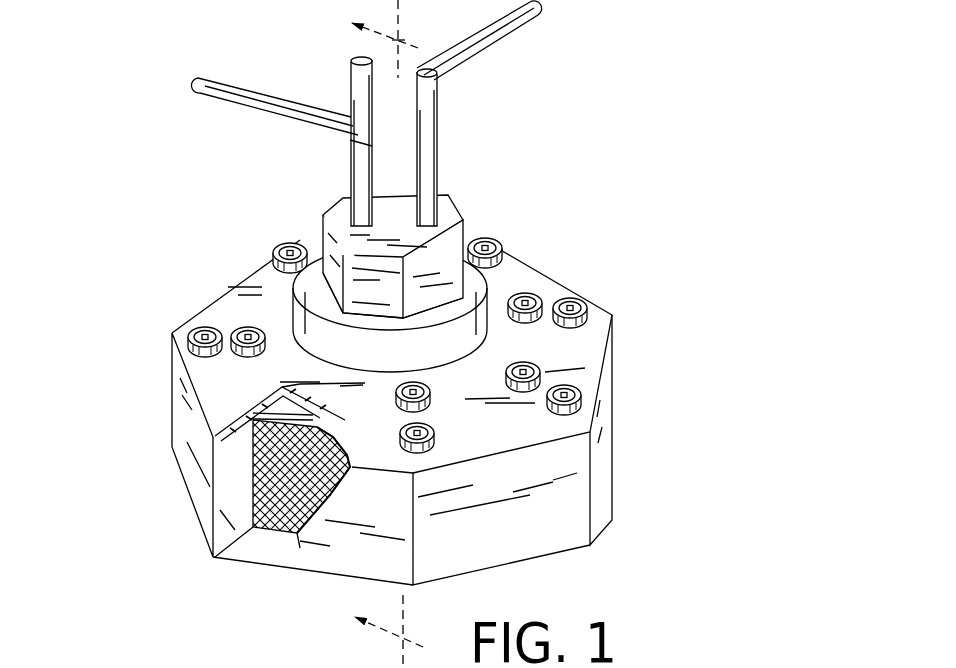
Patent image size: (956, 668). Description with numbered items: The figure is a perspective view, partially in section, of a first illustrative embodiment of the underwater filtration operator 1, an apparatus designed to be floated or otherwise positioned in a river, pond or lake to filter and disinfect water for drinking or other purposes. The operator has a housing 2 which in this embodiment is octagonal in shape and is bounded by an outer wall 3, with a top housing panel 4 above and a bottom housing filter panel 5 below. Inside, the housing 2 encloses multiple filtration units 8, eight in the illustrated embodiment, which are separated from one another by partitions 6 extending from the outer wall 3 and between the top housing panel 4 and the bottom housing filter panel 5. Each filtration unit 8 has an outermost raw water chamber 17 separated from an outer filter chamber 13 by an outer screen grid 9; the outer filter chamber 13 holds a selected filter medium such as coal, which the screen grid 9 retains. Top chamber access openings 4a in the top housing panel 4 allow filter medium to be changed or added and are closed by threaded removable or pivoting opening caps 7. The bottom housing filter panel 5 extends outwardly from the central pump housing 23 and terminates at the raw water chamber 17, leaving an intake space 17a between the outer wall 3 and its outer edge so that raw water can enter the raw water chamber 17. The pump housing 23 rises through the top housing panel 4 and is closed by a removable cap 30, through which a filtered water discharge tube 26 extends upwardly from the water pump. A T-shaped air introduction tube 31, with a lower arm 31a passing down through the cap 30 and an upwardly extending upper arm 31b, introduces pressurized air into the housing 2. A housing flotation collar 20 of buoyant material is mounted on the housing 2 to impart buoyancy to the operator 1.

The underwater filtration operator 1 is at (212, 212).
The housing 2 is at (168, 365).
The outer wall 3 is at (207, 497).
The top housing panel 4 is at (501, 437).
The top chamber access openings 4a is at (240, 322).
The bottom housing filter panel 5 is at (387, 334).
The partitions 6 is at (233, 553).
The opening caps 7 is at (288, 243).
The filtration units 8 is at (168, 417).
The screen grid 9 is at (254, 472).
The outer filter chamber 13 is at (289, 400).
The raw water chamber 17 is at (236, 400).
The intake space 17a is at (250, 548).
The housing flotation collar 20 is at (406, 365).
The pump housing 23 is at (393, 256).
The filtered water discharge tube 26 is at (423, 135).
The cap 30 is at (432, 216).
The air introduction tube 31 is at (253, 97).
The lower arm 31a is at (363, 151).
The upper arm 31b is at (355, 83).